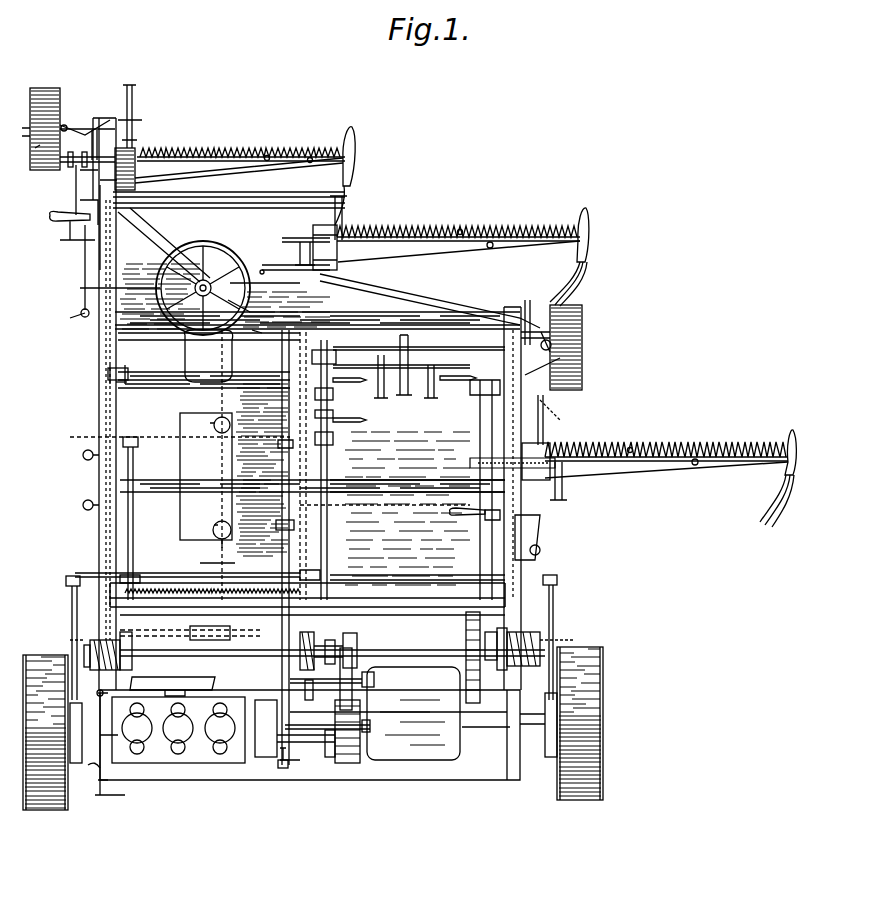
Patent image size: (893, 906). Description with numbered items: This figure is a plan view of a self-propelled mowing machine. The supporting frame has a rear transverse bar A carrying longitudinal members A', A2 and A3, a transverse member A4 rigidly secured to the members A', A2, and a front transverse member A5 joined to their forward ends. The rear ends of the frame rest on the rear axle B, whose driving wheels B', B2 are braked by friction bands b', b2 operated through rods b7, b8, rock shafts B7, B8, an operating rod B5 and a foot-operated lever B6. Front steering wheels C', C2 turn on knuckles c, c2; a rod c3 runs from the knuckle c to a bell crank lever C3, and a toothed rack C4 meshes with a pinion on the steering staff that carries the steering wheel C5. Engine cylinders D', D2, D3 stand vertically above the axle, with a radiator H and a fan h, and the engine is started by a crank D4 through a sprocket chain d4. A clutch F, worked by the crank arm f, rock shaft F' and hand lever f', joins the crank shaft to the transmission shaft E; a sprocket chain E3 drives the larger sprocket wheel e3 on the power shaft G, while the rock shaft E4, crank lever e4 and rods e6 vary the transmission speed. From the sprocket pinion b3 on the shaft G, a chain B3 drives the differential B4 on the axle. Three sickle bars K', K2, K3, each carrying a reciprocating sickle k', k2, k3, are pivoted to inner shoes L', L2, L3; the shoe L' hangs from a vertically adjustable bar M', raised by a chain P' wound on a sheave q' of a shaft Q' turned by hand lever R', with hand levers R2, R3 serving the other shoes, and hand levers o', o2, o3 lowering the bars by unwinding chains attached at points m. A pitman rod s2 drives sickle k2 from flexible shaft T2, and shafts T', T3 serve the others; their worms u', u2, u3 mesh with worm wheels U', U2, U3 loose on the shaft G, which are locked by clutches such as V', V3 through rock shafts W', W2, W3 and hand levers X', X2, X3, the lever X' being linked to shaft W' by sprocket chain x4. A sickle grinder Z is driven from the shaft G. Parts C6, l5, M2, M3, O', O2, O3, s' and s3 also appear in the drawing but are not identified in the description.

The rear transverse bar A is at (310, 752).
The longitudinal member A' is at (88, 404).
The longitudinal member A2 is at (345, 487).
The longitudinal member A3 is at (520, 592).
The transverse member A4 is at (418, 320).
The front transverse member A5 is at (222, 197).
The rear axle B is at (543, 785).
The driving wheel B' is at (48, 752).
The driving wheel B2 is at (604, 724).
The sprocket chain B3 is at (368, 700).
The differential B4 is at (342, 765).
The operating rod B5 is at (206, 476).
The foot-operated lever B6 is at (183, 340).
The rock shaft B7 is at (175, 574).
The rock shaft B8 is at (432, 574).
The friction band b' is at (84, 766).
The friction band b2 is at (550, 757).
The sprocket pinion b3 is at (360, 640).
The brake rod b7 is at (72, 618).
The brake rod b8 is at (554, 625).
The front steering wheel C' is at (68, 110).
The front steering wheel C2 is at (570, 325).
The bell crank lever C3 is at (82, 318).
The toothed rack C4 is at (225, 260).
The steering wheel C5 is at (213, 265).
The right post and shaft C6 is at (526, 330).
The knuckle c is at (45, 150).
The knuckle c2 is at (552, 335).
The rod c3 is at (85, 268).
The engine cylinder D' is at (178, 730).
The engine cylinder D2 is at (178, 728).
The engine cylinder D3 is at (220, 728).
The starting crank D4 is at (102, 795).
The sprocket chain d4 is at (103, 768).
The transmission shaft E is at (308, 770).
The sprocket chain E3 is at (484, 660).
The rock shaft E4 is at (290, 483).
The sprocket wheel e3 is at (465, 635).
The crank lever e4 is at (218, 370).
The rods e6 is at (280, 312).
The clutch F is at (275, 759).
The rock shaft F' is at (276, 529).
The crank arm f is at (285, 793).
The crank lever f' is at (246, 464).
The power shaft G is at (412, 649).
The radiator H is at (190, 630).
The fan h is at (216, 682).
The sickle bar K' is at (246, 164).
The sickle bar K2 is at (408, 235).
The sickle bar K3 is at (665, 445).
The sickle k' is at (277, 131).
The sickle k2 is at (460, 232).
The sickle k3 is at (630, 447).
The inner shoe L' is at (149, 129).
The inner shoe L2 is at (340, 268).
The inner shoe L3 is at (563, 485).
The pivot pin l5 is at (322, 190).
The vertically adjustable bar M' is at (239, 146).
The cutter bar head M2 is at (340, 245).
The cutter bar head M3 is at (550, 452).
The attachment points m is at (310, 156).
The hand lever O' is at (58, 225).
The lever rod O2 is at (300, 268).
The lever plate O3 is at (470, 465).
The hand lever o' is at (73, 210).
The hand lever o2 is at (255, 264).
The hand lever o3 is at (456, 516).
The chain P' is at (84, 385).
The rotary shaft Q' is at (204, 397).
The sheave q' is at (96, 401).
The hand lever R' is at (401, 395).
The hand lever R2 is at (410, 350).
The hand lever R3 is at (432, 400).
The spring s' is at (102, 113).
The pitman rod s2 is at (298, 238).
The spring s3 is at (560, 418).
The flexible shaft T' is at (169, 446).
The flexible shaft T2 is at (345, 505).
The flexible shaft T3 is at (545, 548).
The worm wheel U' is at (100, 664).
The worm wheel U2 is at (300, 648).
The worm wheel U3 is at (540, 634).
The worm u' is at (61, 640).
The worm u2 is at (332, 642).
The worm u3 is at (580, 640).
The clutch V' is at (107, 649).
The clutch V3 is at (507, 665).
The rock shaft W' is at (147, 523).
The rock shaft W2 is at (330, 555).
The rock shaft W3 is at (500, 550).
The hand lever X' is at (341, 470).
The hand lever X2 is at (350, 385).
The hand lever X3 is at (450, 384).
The sprocket chain x4 is at (150, 445).
The sickle grinder Z is at (325, 575).